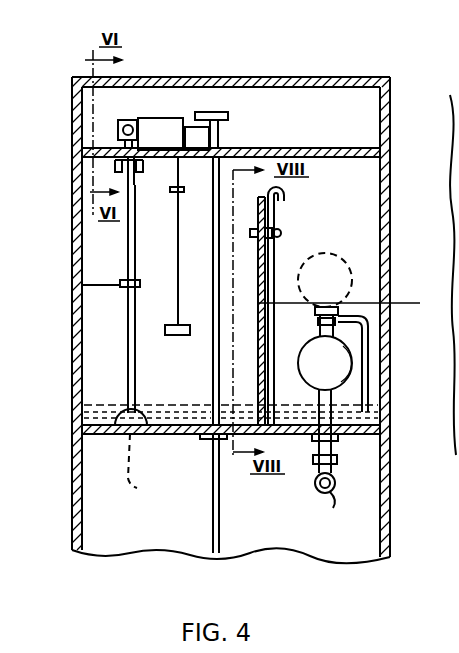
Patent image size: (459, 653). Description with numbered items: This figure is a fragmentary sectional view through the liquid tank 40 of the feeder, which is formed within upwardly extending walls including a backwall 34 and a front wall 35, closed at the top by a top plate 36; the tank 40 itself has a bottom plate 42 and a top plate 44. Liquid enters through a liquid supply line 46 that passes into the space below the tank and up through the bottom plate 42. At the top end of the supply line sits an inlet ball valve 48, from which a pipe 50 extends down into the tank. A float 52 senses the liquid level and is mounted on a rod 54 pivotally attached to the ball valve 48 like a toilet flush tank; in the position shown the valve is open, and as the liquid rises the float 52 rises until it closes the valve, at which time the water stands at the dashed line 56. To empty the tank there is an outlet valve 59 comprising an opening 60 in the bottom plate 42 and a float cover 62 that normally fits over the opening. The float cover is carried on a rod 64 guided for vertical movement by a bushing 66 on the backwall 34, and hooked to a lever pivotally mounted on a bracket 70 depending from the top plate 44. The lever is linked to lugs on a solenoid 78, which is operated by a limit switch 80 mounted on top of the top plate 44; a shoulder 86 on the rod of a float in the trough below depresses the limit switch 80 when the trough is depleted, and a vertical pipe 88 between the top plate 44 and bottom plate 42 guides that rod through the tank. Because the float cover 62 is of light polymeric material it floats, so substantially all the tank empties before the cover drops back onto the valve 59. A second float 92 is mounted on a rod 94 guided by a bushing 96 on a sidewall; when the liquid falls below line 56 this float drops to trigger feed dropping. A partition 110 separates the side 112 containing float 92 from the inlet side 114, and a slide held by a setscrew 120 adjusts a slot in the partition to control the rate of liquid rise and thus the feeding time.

The backwall 34 is at (73, 227).
The front wall 35 is at (390, 505).
The top plate 36 is at (347, 77).
The tank 40 is at (353, 240).
The bottom plate 42 is at (368, 430).
The top plate 44 is at (352, 148).
The liquid supply line 46 is at (336, 498).
The inlet ball valve 48 is at (323, 303).
The pipe 50 is at (368, 355).
The float 52 is at (343, 377).
The rod 54 is at (330, 332).
The dashed line 56 is at (412, 303).
The outlet valve 59 is at (108, 442).
The opening 60 is at (146, 472).
The float cover 62 is at (150, 410).
The rod 64 is at (136, 371).
The bushing 66 is at (141, 283).
The bracket 70 is at (118, 163).
The solenoid 78 is at (128, 118).
The limit switch 80 is at (192, 124).
The shoulder 86 is at (222, 112).
The pipe 88 is at (221, 157).
The second float 92 is at (165, 328).
The rod 94 is at (82, 285).
The bushing 96 is at (170, 189).
The partition 110 is at (262, 387).
The side 112 is at (106, 368).
The inlet side 114 is at (358, 183).
The setscrew 120 is at (288, 240).